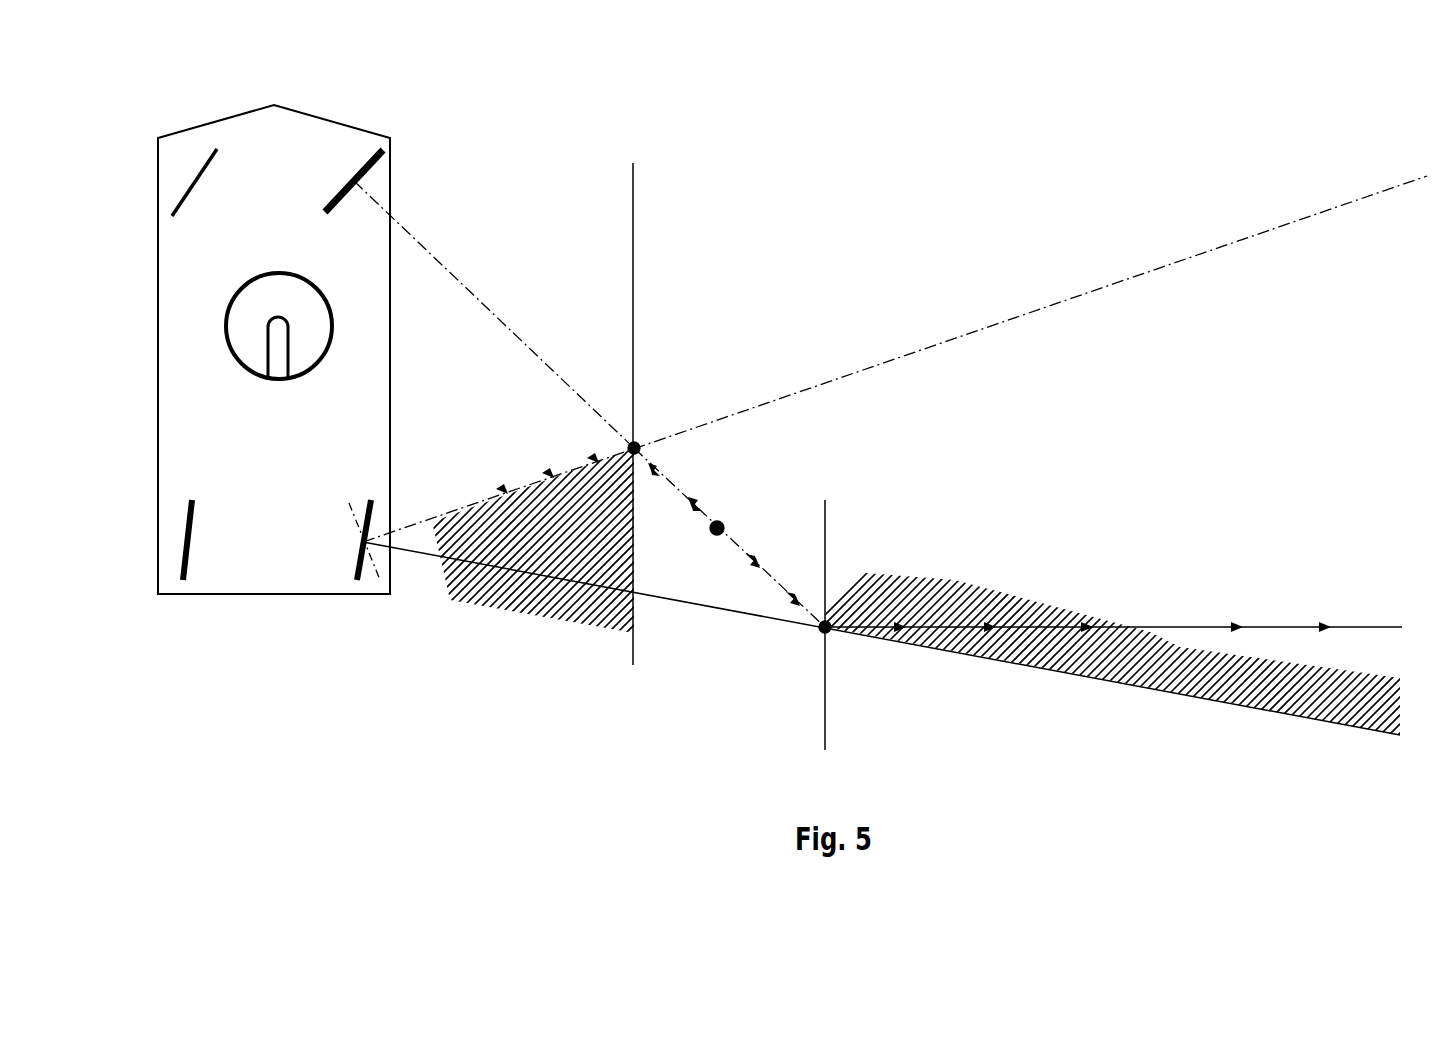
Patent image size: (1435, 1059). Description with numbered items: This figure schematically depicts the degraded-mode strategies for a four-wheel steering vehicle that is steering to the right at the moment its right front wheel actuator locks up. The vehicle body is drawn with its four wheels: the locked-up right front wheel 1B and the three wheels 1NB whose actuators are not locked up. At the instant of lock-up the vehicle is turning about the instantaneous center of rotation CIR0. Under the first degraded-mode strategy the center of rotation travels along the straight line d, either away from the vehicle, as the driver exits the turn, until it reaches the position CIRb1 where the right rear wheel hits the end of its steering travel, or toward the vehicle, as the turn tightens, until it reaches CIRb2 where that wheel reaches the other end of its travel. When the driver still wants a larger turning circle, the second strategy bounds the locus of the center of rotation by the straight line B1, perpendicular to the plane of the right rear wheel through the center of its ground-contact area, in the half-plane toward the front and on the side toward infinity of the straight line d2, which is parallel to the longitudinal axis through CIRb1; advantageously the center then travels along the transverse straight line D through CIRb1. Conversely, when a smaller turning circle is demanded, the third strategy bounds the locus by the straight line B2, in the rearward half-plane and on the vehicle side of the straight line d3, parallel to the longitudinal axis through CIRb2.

The wheel with actuator not locked up 1NB is at (190, 180).
The wheel with locked-up actuator 1B is at (373, 170).
The straight line B2 is at (508, 470).
The straight line B1 is at (696, 606).
The straight line d is at (697, 495).
The straight line d3 is at (633, 200).
The straight line d2 is at (827, 733).
The straight line D is at (1145, 620).
The instantaneous center of rotation CIRb2 is at (638, 432).
The instantaneous center of rotation CIR0 is at (735, 522).
The instantaneous center of rotation CIRb1 is at (835, 618).